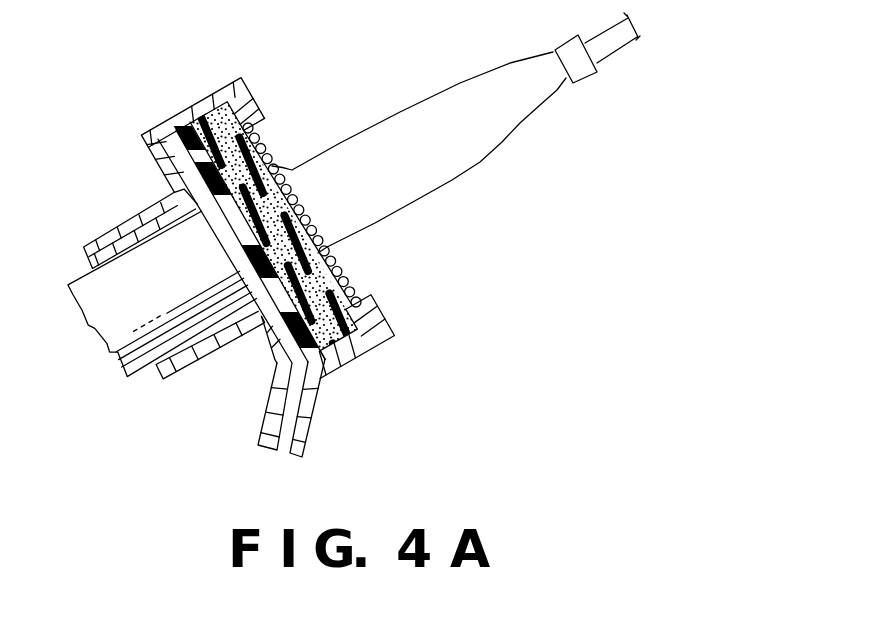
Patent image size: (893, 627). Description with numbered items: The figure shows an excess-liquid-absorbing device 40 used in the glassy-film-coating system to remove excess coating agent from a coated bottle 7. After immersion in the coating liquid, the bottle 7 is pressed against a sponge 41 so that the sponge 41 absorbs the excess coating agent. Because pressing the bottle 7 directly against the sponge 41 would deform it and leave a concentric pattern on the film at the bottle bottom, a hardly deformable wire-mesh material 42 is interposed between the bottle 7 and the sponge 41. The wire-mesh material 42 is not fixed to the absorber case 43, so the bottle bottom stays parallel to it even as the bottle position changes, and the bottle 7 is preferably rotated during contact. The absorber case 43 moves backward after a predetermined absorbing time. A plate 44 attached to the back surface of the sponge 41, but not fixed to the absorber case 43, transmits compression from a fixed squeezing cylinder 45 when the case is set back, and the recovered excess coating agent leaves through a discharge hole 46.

The bottle 7 is at (466, 160).
The excess-liquid-absorbing device 40 is at (294, 248).
The sponge 41 is at (207, 117).
The wire-mesh material 42 is at (260, 139).
The absorber case 43 is at (350, 372).
The plate 44 is at (183, 145).
The squeezing cylinder 45 is at (108, 348).
The discharge hole 46 is at (263, 413).